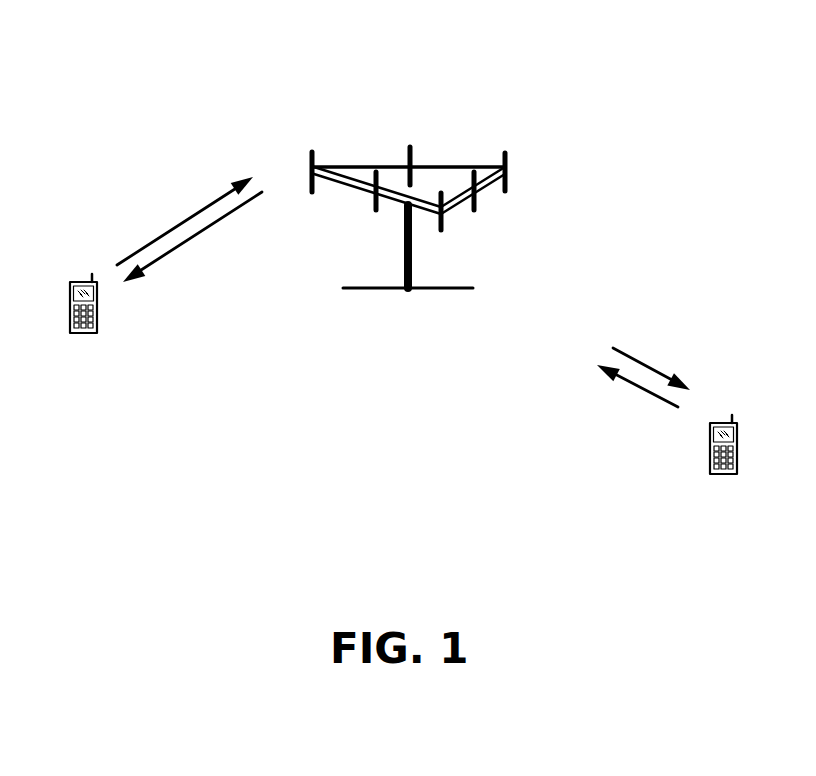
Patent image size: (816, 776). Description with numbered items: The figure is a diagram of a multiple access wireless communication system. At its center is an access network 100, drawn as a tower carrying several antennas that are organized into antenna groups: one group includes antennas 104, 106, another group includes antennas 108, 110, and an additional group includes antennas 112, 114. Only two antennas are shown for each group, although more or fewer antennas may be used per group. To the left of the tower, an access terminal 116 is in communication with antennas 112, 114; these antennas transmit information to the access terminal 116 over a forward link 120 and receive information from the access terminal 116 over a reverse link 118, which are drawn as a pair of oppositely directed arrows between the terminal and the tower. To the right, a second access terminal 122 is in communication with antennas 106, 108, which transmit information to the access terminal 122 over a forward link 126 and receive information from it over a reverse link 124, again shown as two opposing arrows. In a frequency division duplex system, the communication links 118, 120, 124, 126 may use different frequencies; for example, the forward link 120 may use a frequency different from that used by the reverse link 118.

The access network 100 is at (387, 288).
The antenna 104 is at (442, 229).
The antenna 106 is at (474, 208).
The antenna 108 is at (510, 184).
The antenna 110 is at (412, 152).
The antenna 112 is at (312, 165).
The antenna 114 is at (377, 212).
The access terminal 116 is at (87, 281).
The reverse link 118 is at (185, 222).
The forward link 120 is at (202, 228).
The access terminal 122 is at (727, 420).
The reverse link 124 is at (625, 373).
The forward link 126 is at (657, 373).